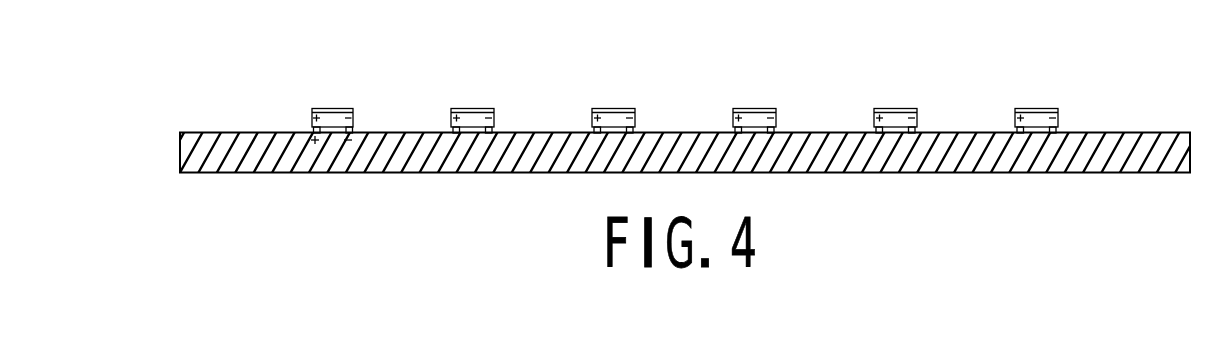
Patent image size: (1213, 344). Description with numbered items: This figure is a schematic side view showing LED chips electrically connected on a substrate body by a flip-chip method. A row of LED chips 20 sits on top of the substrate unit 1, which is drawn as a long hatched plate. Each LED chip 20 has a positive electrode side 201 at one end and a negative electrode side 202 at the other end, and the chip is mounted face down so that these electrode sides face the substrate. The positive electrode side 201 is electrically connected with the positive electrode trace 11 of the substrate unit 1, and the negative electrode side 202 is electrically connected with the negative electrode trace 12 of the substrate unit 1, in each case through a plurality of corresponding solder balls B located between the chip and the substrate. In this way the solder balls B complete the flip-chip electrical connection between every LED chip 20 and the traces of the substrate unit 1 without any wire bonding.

The substrate unit 1 is at (178, 135).
The LED chip 20 is at (339, 71).
The positive electrode side 201 is at (311, 114).
The negative electrode side 202 is at (352, 111).
The solder balls B is at (310, 130).
The positive electrode trace 11 is at (313, 144).
The negative electrode trace 12 is at (349, 143).